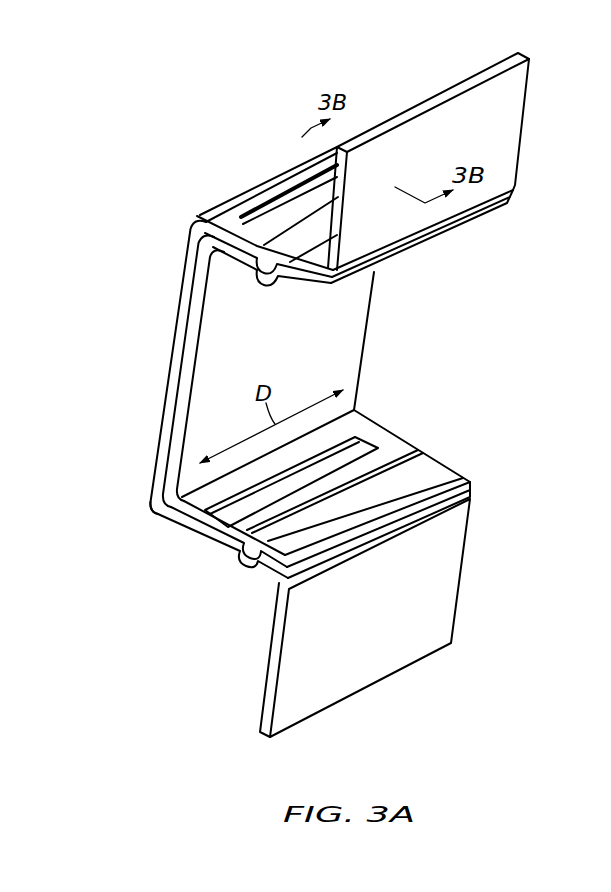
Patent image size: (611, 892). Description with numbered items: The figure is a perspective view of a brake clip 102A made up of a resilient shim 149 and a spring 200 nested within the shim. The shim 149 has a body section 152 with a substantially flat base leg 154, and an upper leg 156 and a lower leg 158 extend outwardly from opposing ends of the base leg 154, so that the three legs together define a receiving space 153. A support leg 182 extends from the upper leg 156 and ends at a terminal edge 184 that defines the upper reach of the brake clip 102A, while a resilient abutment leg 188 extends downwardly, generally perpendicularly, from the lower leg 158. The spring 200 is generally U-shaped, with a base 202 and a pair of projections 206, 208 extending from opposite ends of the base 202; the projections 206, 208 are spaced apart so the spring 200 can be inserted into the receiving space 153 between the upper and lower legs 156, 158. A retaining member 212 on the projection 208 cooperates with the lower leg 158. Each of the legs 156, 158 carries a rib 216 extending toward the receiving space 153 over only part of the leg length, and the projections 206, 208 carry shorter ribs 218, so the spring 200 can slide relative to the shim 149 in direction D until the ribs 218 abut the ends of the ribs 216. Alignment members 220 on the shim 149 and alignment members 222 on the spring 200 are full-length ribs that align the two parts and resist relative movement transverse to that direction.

The brake clip 102A is at (165, 125).
The resilient shim 149 is at (156, 469).
The body section 152 is at (151, 521).
The receiving space 153 is at (350, 318).
The base leg 154 is at (172, 352).
The upper leg 156 is at (265, 181).
The lower leg 158 is at (197, 539).
The support leg 182 is at (493, 127).
The terminal edge 184 is at (412, 114).
The resilient abutment leg 188 is at (430, 578).
The spring 200 is at (359, 385).
The base 202 is at (366, 340).
The projection 206 is at (304, 288).
The projection 208 is at (472, 487).
The retaining member 212 is at (247, 563).
The rib 216 is at (284, 383).
The rib 218 is at (212, 242).
The alignment member 220 is at (231, 222).
The alignment member 222 is at (266, 276).